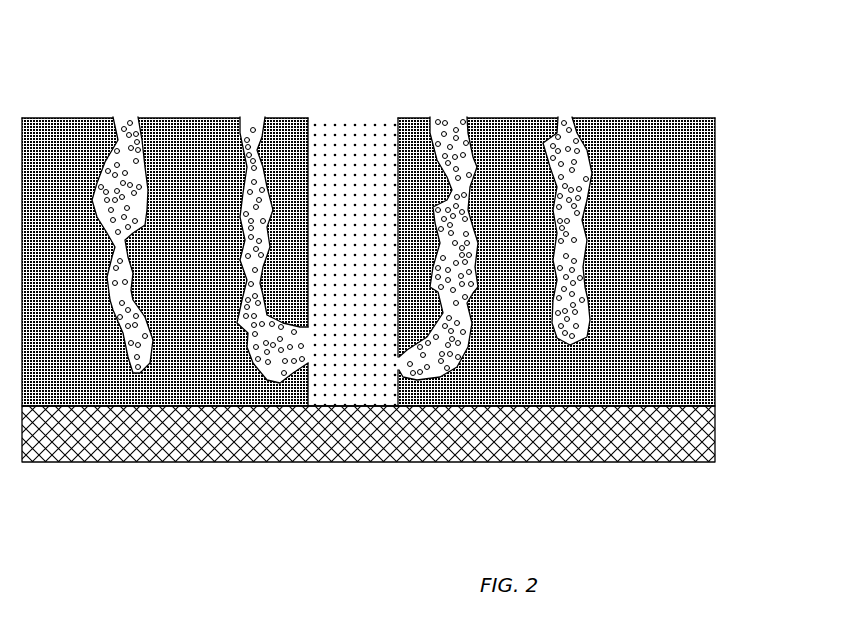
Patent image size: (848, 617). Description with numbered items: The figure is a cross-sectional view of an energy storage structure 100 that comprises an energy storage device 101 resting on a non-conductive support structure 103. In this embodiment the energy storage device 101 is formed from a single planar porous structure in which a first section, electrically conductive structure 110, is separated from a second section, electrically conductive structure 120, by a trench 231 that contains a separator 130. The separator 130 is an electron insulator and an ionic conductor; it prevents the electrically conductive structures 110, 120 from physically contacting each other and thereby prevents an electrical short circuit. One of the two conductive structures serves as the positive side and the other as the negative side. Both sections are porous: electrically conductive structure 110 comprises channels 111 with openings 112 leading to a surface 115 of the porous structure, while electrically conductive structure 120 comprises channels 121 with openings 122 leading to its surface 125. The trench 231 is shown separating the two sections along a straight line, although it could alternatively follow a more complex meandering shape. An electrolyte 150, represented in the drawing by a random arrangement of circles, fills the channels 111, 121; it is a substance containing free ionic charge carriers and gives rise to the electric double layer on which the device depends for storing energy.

The energy storage structure 100 is at (718, 98).
The energy storage device 101 is at (745, 117).
The non-conductive support structure 103 is at (622, 430).
The electrically conductive structure 110 is at (165, 237).
The channels 111 is at (243, 290).
The openings 112 is at (121, 114).
The surface 115 is at (215, 124).
The electrically conductive structure 120 is at (541, 226).
The channels 121 is at (480, 292).
The openings 122 is at (457, 224).
The surface 125 is at (622, 122).
The separator 130 is at (352, 150).
The electrolyte 150 is at (570, 117).
The trench 231 is at (362, 408).